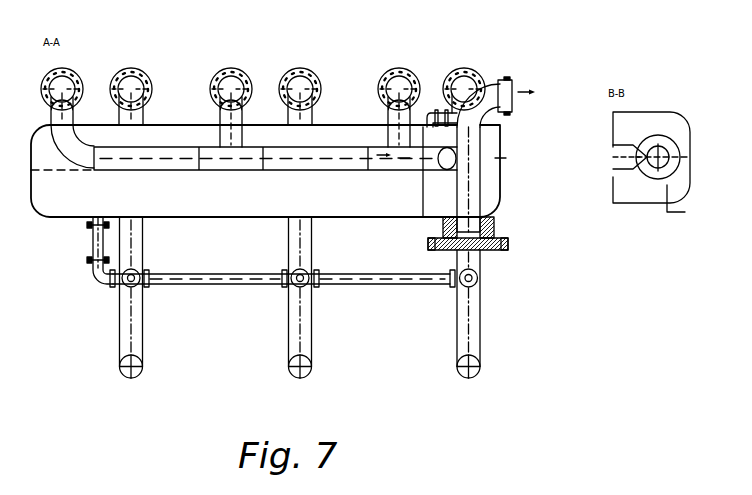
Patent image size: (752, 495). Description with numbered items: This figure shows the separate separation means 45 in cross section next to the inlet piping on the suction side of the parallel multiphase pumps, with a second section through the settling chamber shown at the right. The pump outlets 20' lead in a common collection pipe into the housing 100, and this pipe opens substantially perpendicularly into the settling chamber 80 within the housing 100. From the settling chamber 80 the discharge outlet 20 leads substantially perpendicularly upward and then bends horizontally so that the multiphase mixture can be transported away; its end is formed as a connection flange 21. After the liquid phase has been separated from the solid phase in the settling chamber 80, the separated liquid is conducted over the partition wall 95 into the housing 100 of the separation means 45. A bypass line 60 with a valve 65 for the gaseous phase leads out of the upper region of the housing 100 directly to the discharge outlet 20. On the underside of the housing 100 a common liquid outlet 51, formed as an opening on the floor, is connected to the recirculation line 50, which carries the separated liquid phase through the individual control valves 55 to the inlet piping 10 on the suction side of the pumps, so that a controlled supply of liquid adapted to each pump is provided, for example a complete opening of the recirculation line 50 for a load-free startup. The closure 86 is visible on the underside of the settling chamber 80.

The inlet 10 is at (147, 337).
The outlet 20 is at (591, 121).
The pump outlet 20' is at (336, 118).
The outlet flange 21 is at (511, 74).
The separation means 45 is at (266, 85).
The recirculation line 50 is at (208, 285).
The liquid outlet 51 is at (93, 217).
The control valve 55 is at (140, 266).
The bypass line 60 is at (430, 110).
The valve 65 is at (440, 109).
The settling chamber 80 is at (490, 193).
The closure 86 is at (493, 250).
The partition wall 95 is at (422, 198).
The housing 100 is at (213, 217).